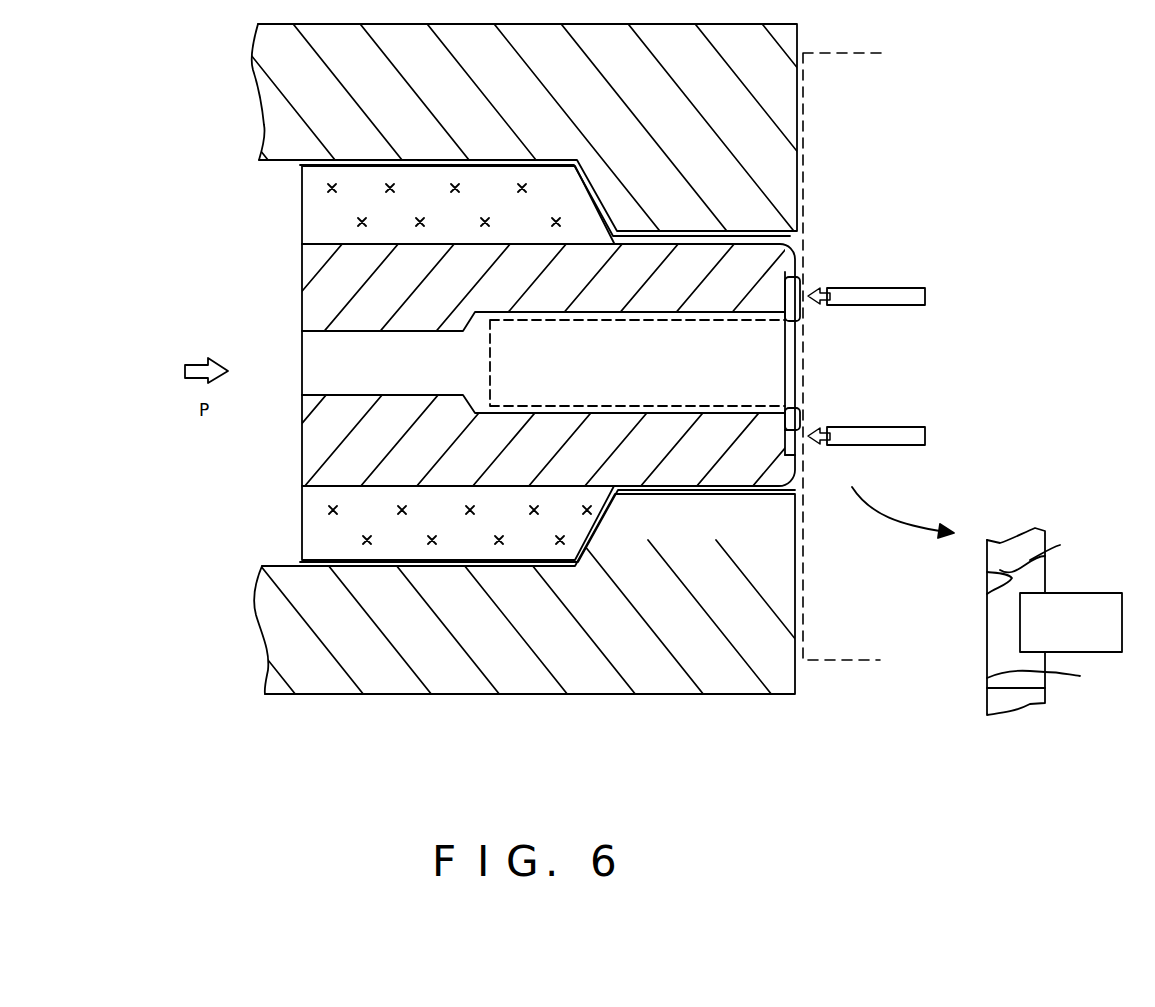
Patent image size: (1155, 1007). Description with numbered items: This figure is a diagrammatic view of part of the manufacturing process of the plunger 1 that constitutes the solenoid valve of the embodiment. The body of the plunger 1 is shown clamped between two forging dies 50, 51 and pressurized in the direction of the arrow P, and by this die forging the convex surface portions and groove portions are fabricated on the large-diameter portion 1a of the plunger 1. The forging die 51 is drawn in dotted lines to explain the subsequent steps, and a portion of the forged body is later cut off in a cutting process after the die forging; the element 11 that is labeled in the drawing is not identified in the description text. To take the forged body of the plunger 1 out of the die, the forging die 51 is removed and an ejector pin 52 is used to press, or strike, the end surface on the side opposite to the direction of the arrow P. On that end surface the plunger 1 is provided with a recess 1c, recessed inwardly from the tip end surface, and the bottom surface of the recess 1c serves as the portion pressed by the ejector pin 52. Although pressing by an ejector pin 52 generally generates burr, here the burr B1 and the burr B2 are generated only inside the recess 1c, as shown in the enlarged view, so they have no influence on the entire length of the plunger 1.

The plunger 1 is at (275, 261).
The large-diameter portion 1a is at (737, 231).
The recess 1c is at (800, 418).
The elastic insulating plate 11 is at (392, 548).
The forging die 50 is at (614, 678).
The forging die 51 is at (855, 648).
The ejector pin 52 is at (895, 293).
The burr B1 is at (1045, 550).
The burr B2 is at (1045, 674).